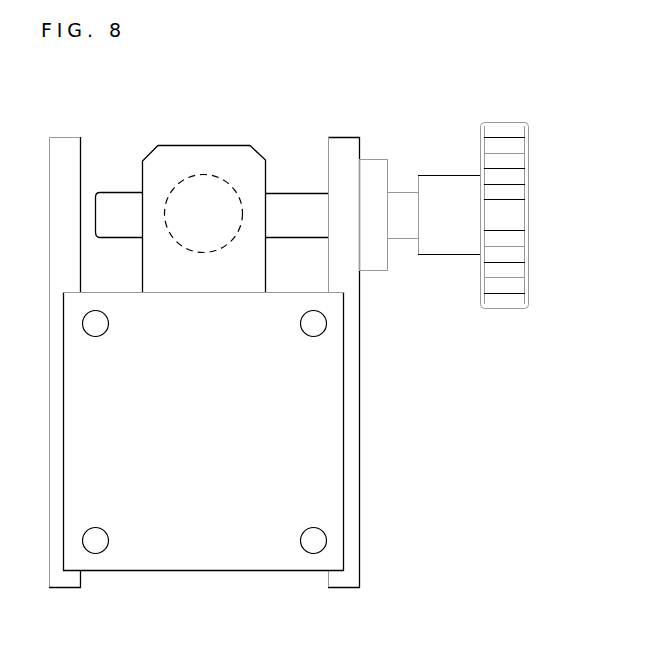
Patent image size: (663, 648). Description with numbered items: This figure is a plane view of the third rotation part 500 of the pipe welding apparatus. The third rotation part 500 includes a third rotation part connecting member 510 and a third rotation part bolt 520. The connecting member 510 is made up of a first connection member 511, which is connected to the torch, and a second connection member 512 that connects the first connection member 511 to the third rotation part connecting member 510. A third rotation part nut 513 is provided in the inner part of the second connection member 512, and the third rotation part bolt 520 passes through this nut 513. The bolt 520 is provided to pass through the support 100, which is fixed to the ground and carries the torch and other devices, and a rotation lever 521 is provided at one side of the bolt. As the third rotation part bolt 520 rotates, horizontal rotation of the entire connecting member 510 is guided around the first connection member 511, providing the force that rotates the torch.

The third rotation part 500 is at (76, 68).
The support 100 is at (342, 582).
The third rotation part connecting member 510 is at (289, 330).
The first connection member 511 is at (293, 417).
The second connection member 512 is at (308, 225).
The third rotation part nut 513 is at (203, 192).
The third rotation part bolt 520 is at (295, 205).
The knob 521 is at (504, 128).